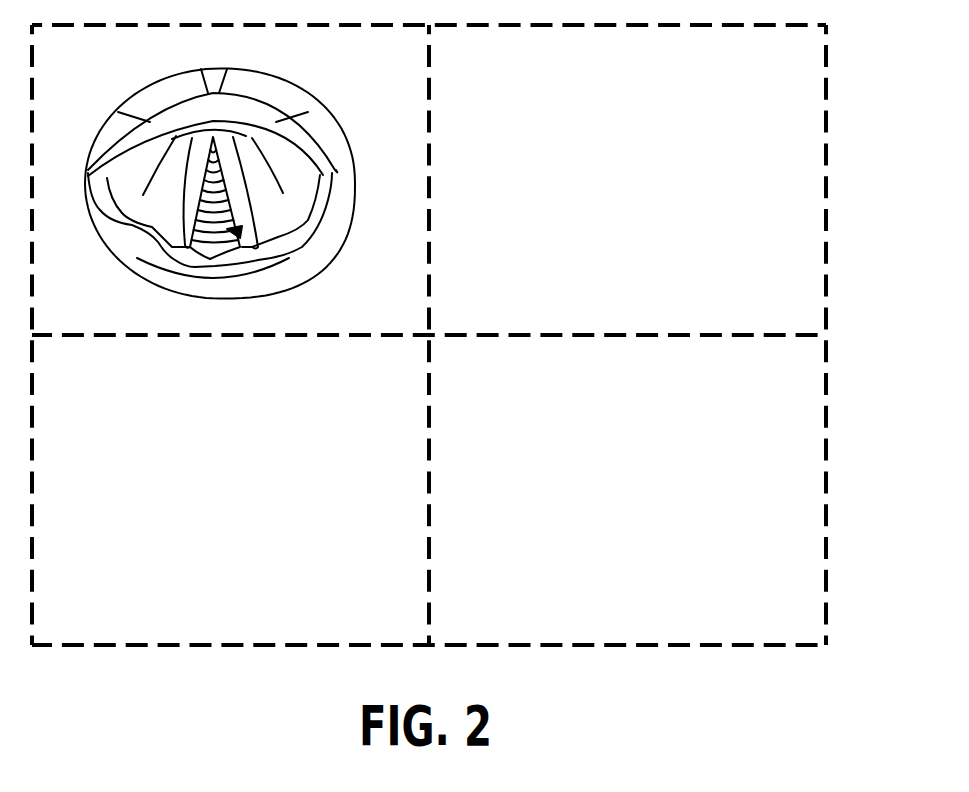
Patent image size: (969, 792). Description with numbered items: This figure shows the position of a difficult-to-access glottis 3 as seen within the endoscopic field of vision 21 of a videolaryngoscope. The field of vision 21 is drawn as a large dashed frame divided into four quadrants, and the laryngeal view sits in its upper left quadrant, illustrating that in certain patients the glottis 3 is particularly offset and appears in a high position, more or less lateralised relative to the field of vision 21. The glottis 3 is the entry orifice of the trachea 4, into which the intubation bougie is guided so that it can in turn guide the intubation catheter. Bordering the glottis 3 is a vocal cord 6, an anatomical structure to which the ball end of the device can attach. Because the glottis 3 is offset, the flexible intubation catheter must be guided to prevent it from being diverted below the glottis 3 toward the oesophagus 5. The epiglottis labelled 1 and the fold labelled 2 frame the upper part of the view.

The epiglottis 1 is at (229, 84).
The epiglottis fold 2 is at (248, 118).
The glottis 3 is at (238, 232).
The trachea 4 is at (222, 199).
The oesophagus 5 is at (232, 260).
The vocal cord 6 is at (235, 173).
The endoscopic field of vision 21 is at (758, 92).